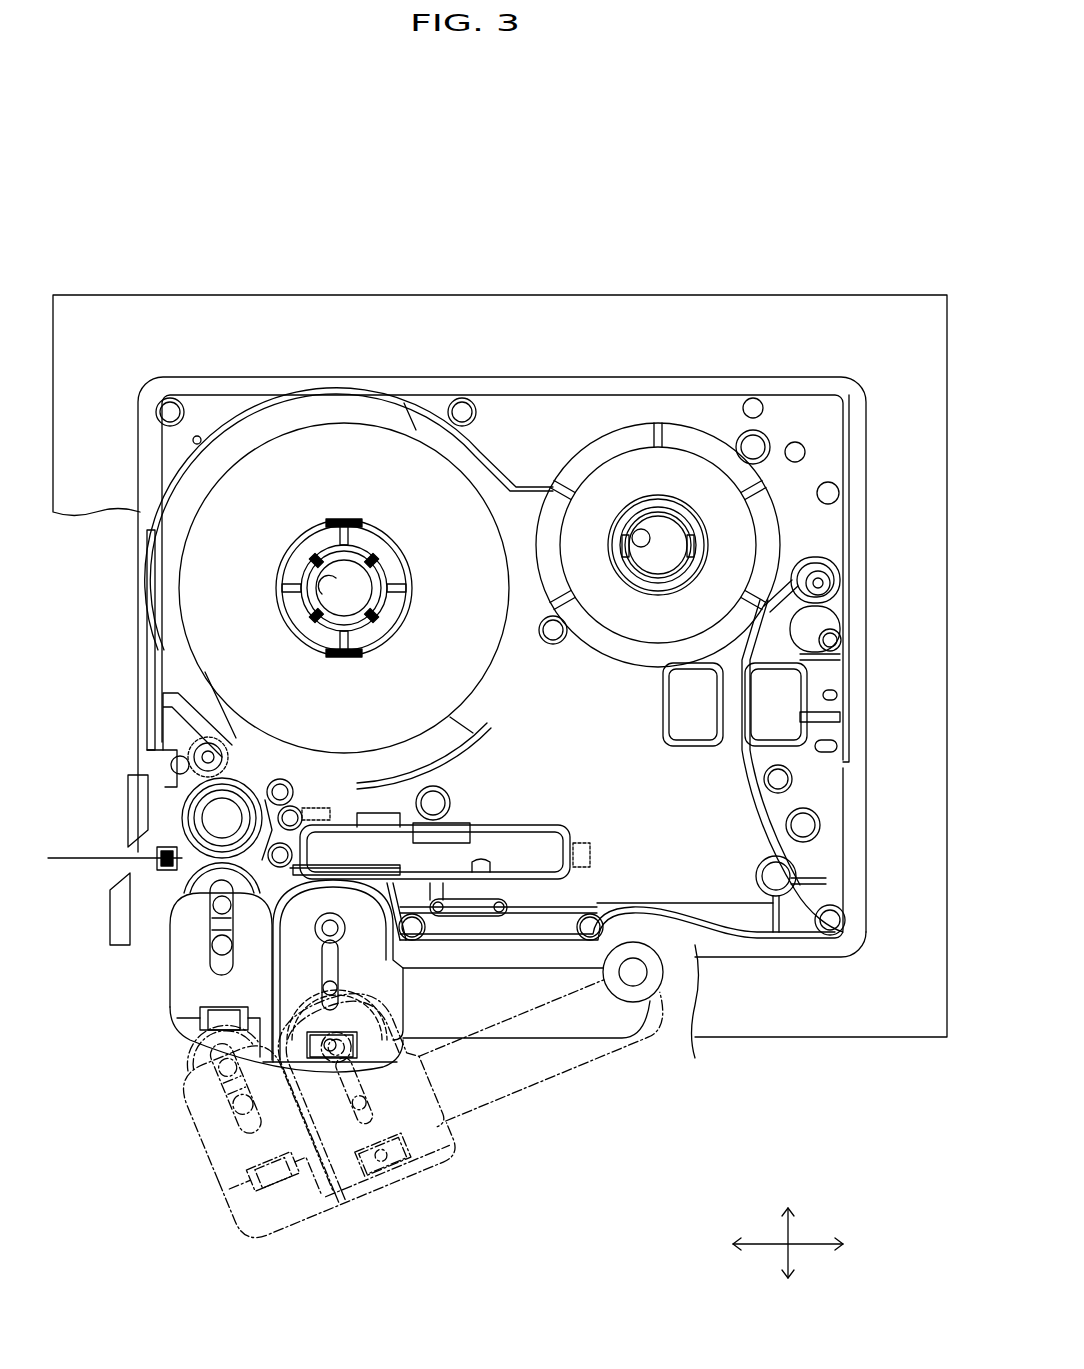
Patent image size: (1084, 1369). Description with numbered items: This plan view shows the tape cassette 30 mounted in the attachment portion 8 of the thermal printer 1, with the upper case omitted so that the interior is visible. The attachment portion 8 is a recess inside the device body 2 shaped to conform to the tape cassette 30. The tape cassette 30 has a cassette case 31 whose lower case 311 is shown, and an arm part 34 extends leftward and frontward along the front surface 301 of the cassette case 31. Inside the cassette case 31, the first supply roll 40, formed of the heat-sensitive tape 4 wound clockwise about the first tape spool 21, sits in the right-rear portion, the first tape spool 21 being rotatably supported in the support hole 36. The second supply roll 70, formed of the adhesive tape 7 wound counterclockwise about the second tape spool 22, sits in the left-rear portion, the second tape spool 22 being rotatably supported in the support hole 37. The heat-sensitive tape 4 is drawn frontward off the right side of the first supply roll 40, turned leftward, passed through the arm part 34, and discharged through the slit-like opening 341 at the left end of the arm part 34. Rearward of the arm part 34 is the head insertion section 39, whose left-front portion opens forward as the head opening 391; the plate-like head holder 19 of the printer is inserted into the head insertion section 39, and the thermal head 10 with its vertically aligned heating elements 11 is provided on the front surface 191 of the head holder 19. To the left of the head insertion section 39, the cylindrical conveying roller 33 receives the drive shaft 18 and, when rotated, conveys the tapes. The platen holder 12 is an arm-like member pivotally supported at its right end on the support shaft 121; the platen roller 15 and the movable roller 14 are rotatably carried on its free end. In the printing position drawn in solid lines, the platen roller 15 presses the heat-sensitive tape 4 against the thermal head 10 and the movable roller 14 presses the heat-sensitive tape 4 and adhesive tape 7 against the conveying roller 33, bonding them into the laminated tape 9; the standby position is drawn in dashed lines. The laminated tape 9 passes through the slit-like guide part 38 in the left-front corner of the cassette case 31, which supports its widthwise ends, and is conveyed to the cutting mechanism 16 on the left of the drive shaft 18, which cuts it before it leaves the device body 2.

The thermal printer 1 is at (537, 200).
The device body 2 is at (558, 297).
The tape cassette 30 is at (767, 388).
The cassette case 31 is at (497, 392).
The lower case 311 is at (177, 440).
The front surface 301 is at (795, 950).
The heat-sensitive tape 4 is at (776, 808).
The attachment portion 8 is at (138, 544).
The adhesive tape 7 is at (210, 713).
The second supply roll 70 is at (349, 420).
The second tape spool 22 is at (291, 545).
The support hole 37 is at (305, 592).
The first supply roll 40 is at (630, 447).
The first tape spool 21 is at (658, 497).
The support hole 36 is at (648, 538).
The conveying roller 33 is at (232, 800).
The drive shaft 18 is at (198, 768).
The cutting mechanism 16 is at (135, 808).
The laminated tape 9 is at (101, 857).
The guide part 38 is at (157, 860).
The heating elements 11 is at (345, 875).
The head holder 19 is at (535, 855).
The head insertion section 39 is at (505, 840).
The front surface 191 is at (490, 870).
The thermal head 10 is at (436, 880).
The arm part 34 is at (475, 945).
The platen holder 12 is at (174, 1034).
The platen roller 15 is at (255, 945).
The movable roller 14 is at (195, 880).
The head opening 391 is at (210, 893).
The opening 341 is at (330, 945).
The support shaft 121 is at (640, 972).